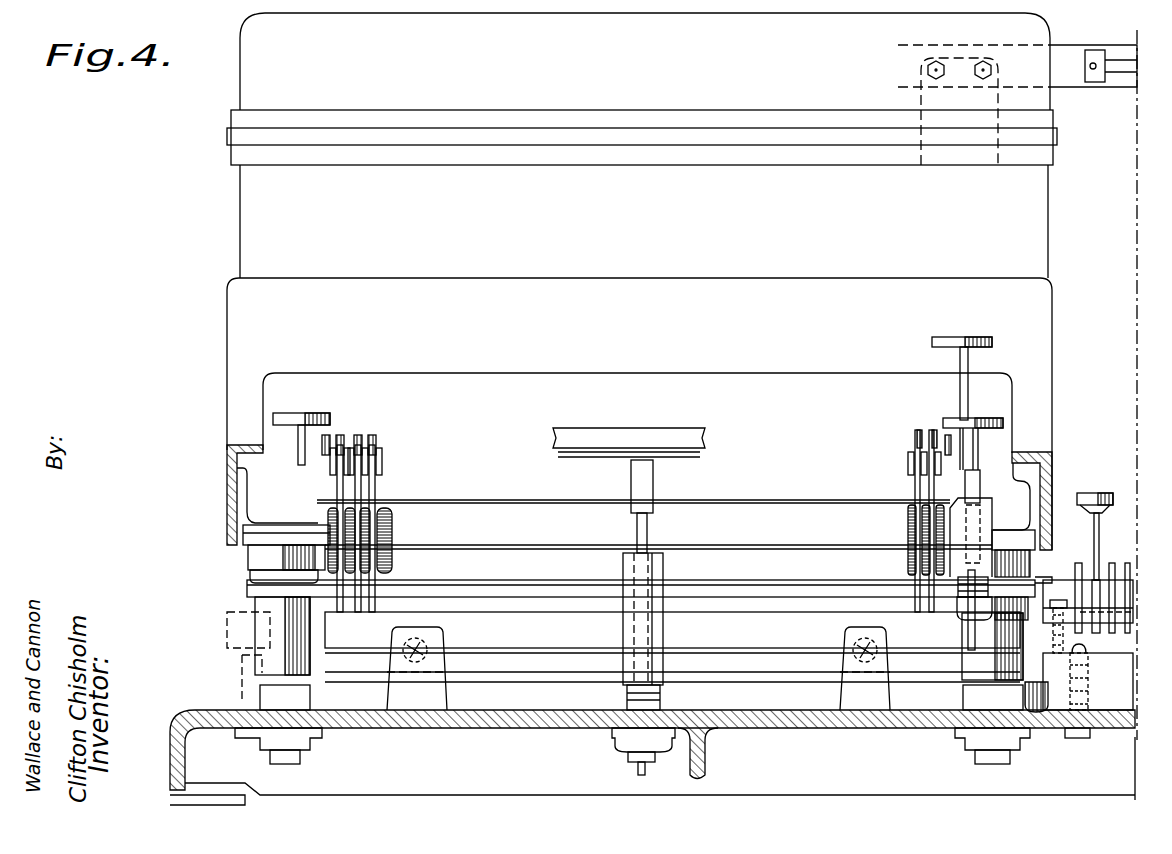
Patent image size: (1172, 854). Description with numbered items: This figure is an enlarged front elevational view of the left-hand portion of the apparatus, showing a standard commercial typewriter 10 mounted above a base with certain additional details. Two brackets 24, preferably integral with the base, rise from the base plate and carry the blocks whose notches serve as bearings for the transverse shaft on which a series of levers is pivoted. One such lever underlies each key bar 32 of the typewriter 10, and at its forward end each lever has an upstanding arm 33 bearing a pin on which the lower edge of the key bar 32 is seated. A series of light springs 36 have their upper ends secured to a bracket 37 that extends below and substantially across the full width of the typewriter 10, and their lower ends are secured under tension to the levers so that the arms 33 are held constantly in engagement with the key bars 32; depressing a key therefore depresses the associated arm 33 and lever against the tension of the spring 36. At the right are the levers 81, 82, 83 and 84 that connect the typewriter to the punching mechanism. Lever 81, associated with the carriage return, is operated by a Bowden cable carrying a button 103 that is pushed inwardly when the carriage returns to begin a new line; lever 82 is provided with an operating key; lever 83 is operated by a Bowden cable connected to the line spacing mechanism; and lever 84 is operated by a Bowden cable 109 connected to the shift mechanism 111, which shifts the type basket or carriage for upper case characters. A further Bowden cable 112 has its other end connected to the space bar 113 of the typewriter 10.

The typewriter 10 is at (240, 245).
The brackets 24 is at (447, 692).
The key bar 32 is at (371, 437).
The upstanding arm 33 is at (337, 484).
The springs 36 is at (393, 557).
The bracket 37 is at (513, 494).
The lever 81 is at (1077, 572).
The lever 82 is at (1093, 550).
The lever 83 is at (1112, 565).
The lever 84 is at (1128, 566).
The button 103 is at (1096, 40).
The Bowden cable 109 is at (968, 633).
The shift mechanism 111 is at (976, 486).
The Bowden cable 112 is at (632, 768).
The space bar 113 is at (683, 417).